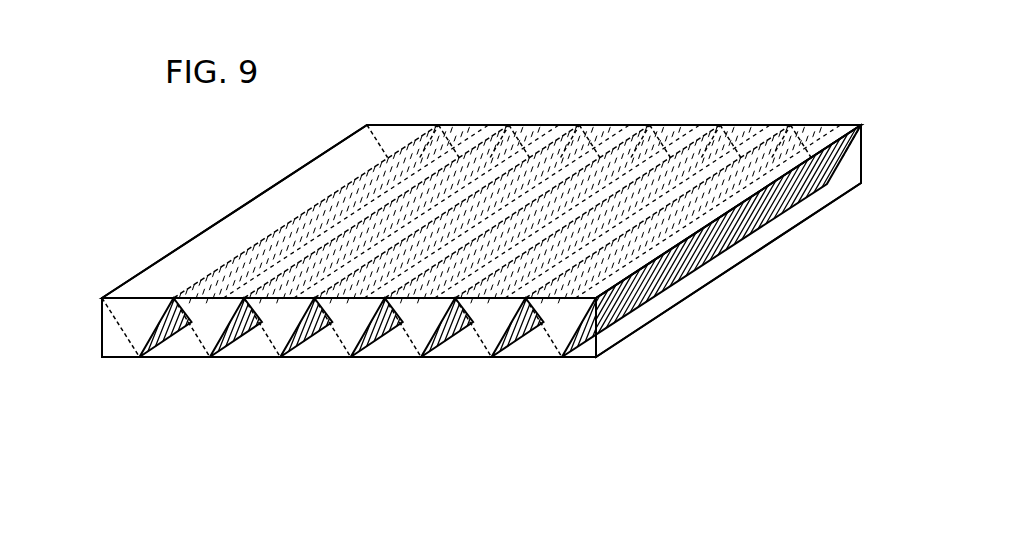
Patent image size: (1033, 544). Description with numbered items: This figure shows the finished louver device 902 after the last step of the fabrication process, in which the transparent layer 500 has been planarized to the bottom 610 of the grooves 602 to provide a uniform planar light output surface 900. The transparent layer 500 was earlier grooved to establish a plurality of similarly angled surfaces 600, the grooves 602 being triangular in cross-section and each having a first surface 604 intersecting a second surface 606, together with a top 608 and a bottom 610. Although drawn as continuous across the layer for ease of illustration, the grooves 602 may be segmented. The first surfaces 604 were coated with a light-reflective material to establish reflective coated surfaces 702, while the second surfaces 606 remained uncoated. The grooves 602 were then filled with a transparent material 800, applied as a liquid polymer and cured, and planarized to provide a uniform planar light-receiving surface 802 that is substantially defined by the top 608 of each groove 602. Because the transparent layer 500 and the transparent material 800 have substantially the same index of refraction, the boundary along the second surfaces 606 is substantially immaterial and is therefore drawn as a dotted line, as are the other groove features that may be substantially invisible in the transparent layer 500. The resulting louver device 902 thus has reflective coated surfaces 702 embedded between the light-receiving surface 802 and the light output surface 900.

The transparent layer 500 is at (820, 133).
The angled surfaces 600 is at (536, 342).
The grooves 602 is at (208, 365).
The first surface 604 is at (368, 343).
The second surface 606 is at (410, 343).
The top 608 is at (140, 358).
The bottom 610 is at (173, 297).
The reflective coated surface 702 is at (715, 248).
The transparent material 800 is at (117, 343).
The light-receiving surface 802 is at (588, 359).
The light output surface 900 is at (239, 197).
The louver device 902 is at (659, 82).